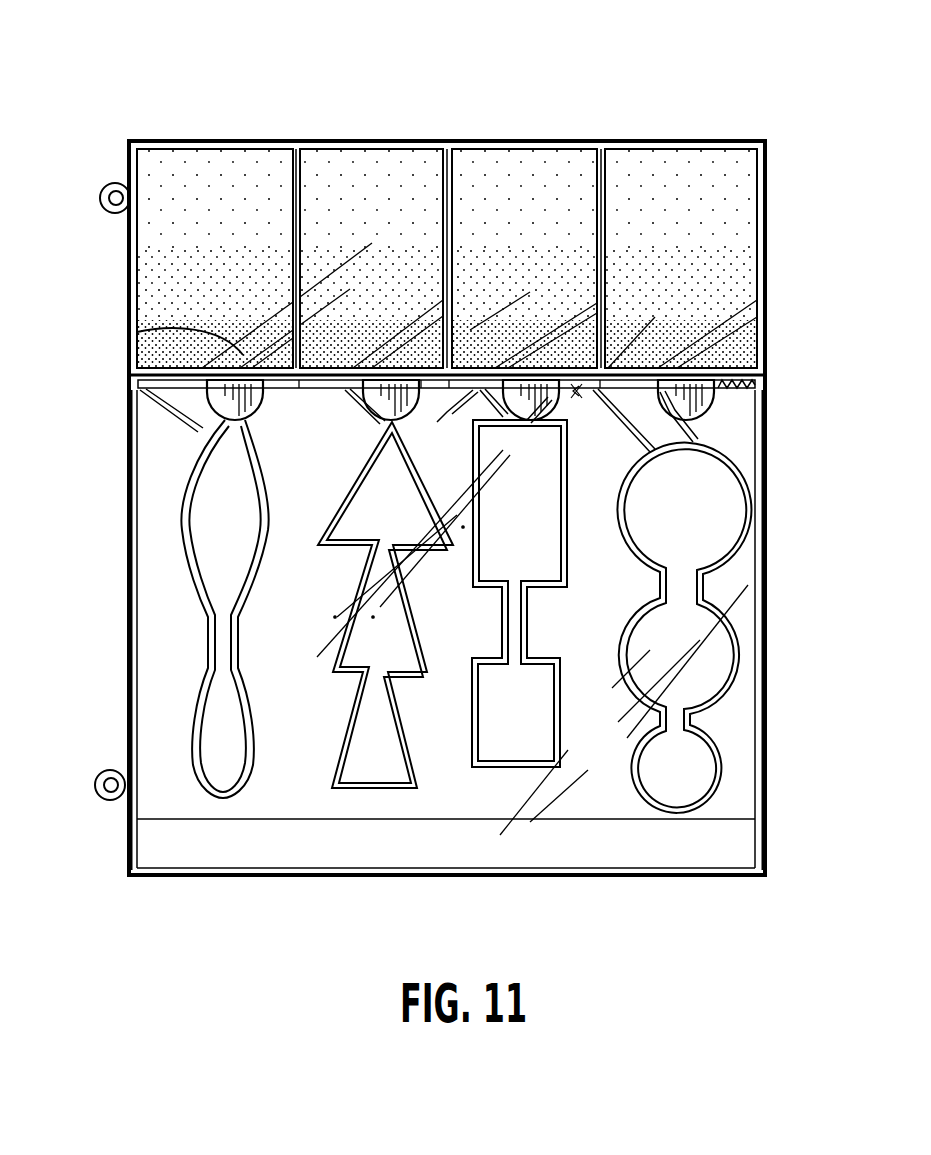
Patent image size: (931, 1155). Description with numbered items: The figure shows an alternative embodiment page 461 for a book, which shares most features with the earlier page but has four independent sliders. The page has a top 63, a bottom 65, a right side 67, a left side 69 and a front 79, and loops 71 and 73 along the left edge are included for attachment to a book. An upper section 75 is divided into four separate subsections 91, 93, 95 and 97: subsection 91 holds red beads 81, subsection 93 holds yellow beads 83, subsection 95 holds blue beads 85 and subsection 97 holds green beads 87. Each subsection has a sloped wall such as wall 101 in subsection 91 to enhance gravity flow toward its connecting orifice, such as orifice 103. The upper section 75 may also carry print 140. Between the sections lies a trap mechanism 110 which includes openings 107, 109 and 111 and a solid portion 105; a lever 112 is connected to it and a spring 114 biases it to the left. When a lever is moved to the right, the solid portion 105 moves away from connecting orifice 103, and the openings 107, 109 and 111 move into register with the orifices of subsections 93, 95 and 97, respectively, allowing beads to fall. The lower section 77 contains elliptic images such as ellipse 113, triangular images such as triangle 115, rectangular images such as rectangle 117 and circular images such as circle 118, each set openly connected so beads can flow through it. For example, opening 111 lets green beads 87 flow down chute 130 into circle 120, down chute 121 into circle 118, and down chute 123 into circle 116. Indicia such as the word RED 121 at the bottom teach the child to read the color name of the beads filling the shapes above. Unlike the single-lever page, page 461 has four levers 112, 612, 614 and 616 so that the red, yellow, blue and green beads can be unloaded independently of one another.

The page 461 is at (545, 95).
The top 63 is at (398, 140).
The bottom 65 is at (526, 877).
The right side 67 is at (766, 530).
The left side 69 is at (127, 638).
The loop 71 is at (104, 214).
The loop 73 is at (103, 805).
The upper section 75 is at (478, 213).
The lower section 77 is at (828, 889).
The front 79 is at (302, 677).
The red beads 81 is at (296, 142).
The yellow beads 83 is at (433, 155).
The blue beads 85 is at (574, 155).
The green beads 87 is at (717, 155).
The subsection 91 is at (238, 197).
The subsection 93 is at (391, 197).
The subsection 95 is at (546, 194).
The subsection 97 is at (698, 194).
The sloped wall 101 is at (137, 332).
The connecting orifice 103 is at (210, 410).
The solid portion 105 is at (352, 425).
The opening 107 is at (277, 384).
The opening 109 is at (423, 385).
The trap mechanism 110 is at (473, 430).
The opening 111 is at (577, 397).
The lever 112 is at (672, 415).
The ellipse 113 is at (208, 546).
The spring 114 is at (740, 392).
The triangle 115 is at (333, 540).
The circle 116 is at (672, 772).
The rectangle 117 is at (510, 563).
The circle 118 is at (622, 703).
The circle 120 is at (660, 533).
The chute 121 is at (677, 577).
The chute 123 is at (575, 742).
The chute 130 is at (625, 430).
The print 140 is at (261, 205).
The lever 612 is at (528, 433).
The lever 614 is at (383, 437).
The lever 616 is at (238, 425).